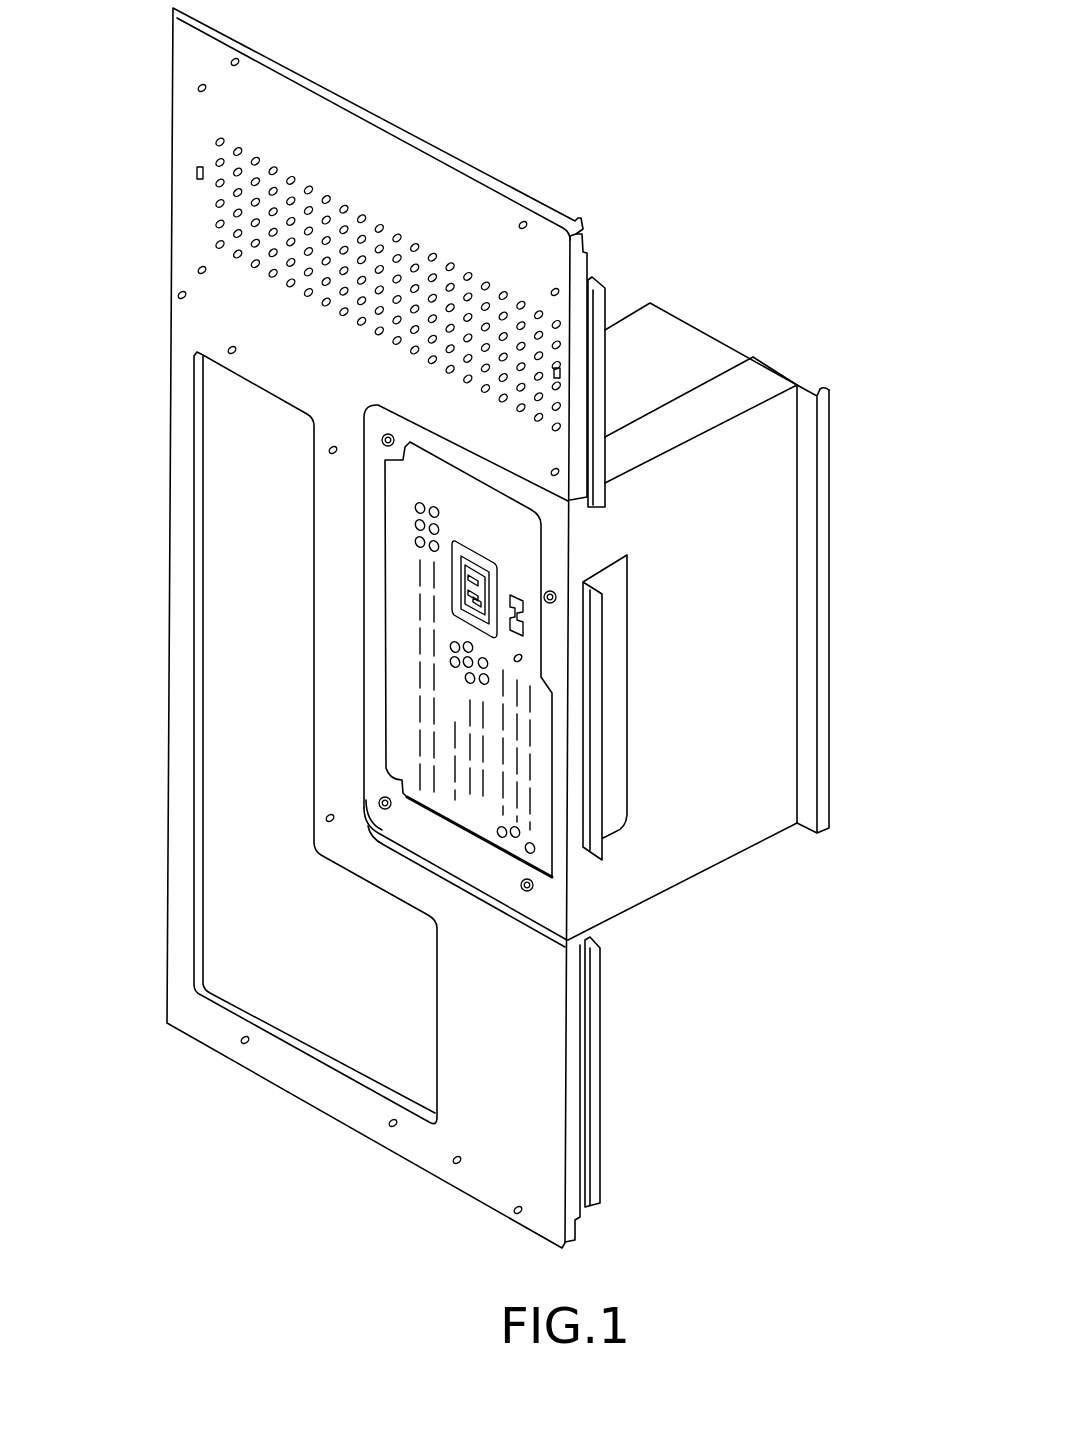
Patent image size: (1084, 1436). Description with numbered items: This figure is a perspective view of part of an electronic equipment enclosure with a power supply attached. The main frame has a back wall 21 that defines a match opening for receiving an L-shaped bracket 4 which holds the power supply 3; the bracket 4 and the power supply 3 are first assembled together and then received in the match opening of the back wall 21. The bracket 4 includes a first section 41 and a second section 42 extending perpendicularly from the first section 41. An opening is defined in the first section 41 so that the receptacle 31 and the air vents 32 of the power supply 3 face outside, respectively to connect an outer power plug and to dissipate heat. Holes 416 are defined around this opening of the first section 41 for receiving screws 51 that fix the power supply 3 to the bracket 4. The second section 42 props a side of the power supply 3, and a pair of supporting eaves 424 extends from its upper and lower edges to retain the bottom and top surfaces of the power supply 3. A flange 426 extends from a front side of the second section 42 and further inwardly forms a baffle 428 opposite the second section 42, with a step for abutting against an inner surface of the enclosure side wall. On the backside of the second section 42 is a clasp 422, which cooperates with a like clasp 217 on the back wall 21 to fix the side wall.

The back wall 21 is at (395, 172).
The clasp 217 is at (600, 367).
The power supply 3 is at (700, 316).
The receptacle 31 is at (460, 602).
The air vents 32 is at (455, 665).
The bracket 4 is at (755, 624).
The first section 41 is at (470, 872).
The holes 416 is at (400, 812).
The second section 42 is at (737, 823).
The clasp 422 is at (598, 752).
The supporting eaves 424 is at (742, 387).
The flange 426 is at (815, 392).
The baffle 428 is at (823, 500).
The screws 51 is at (528, 887).